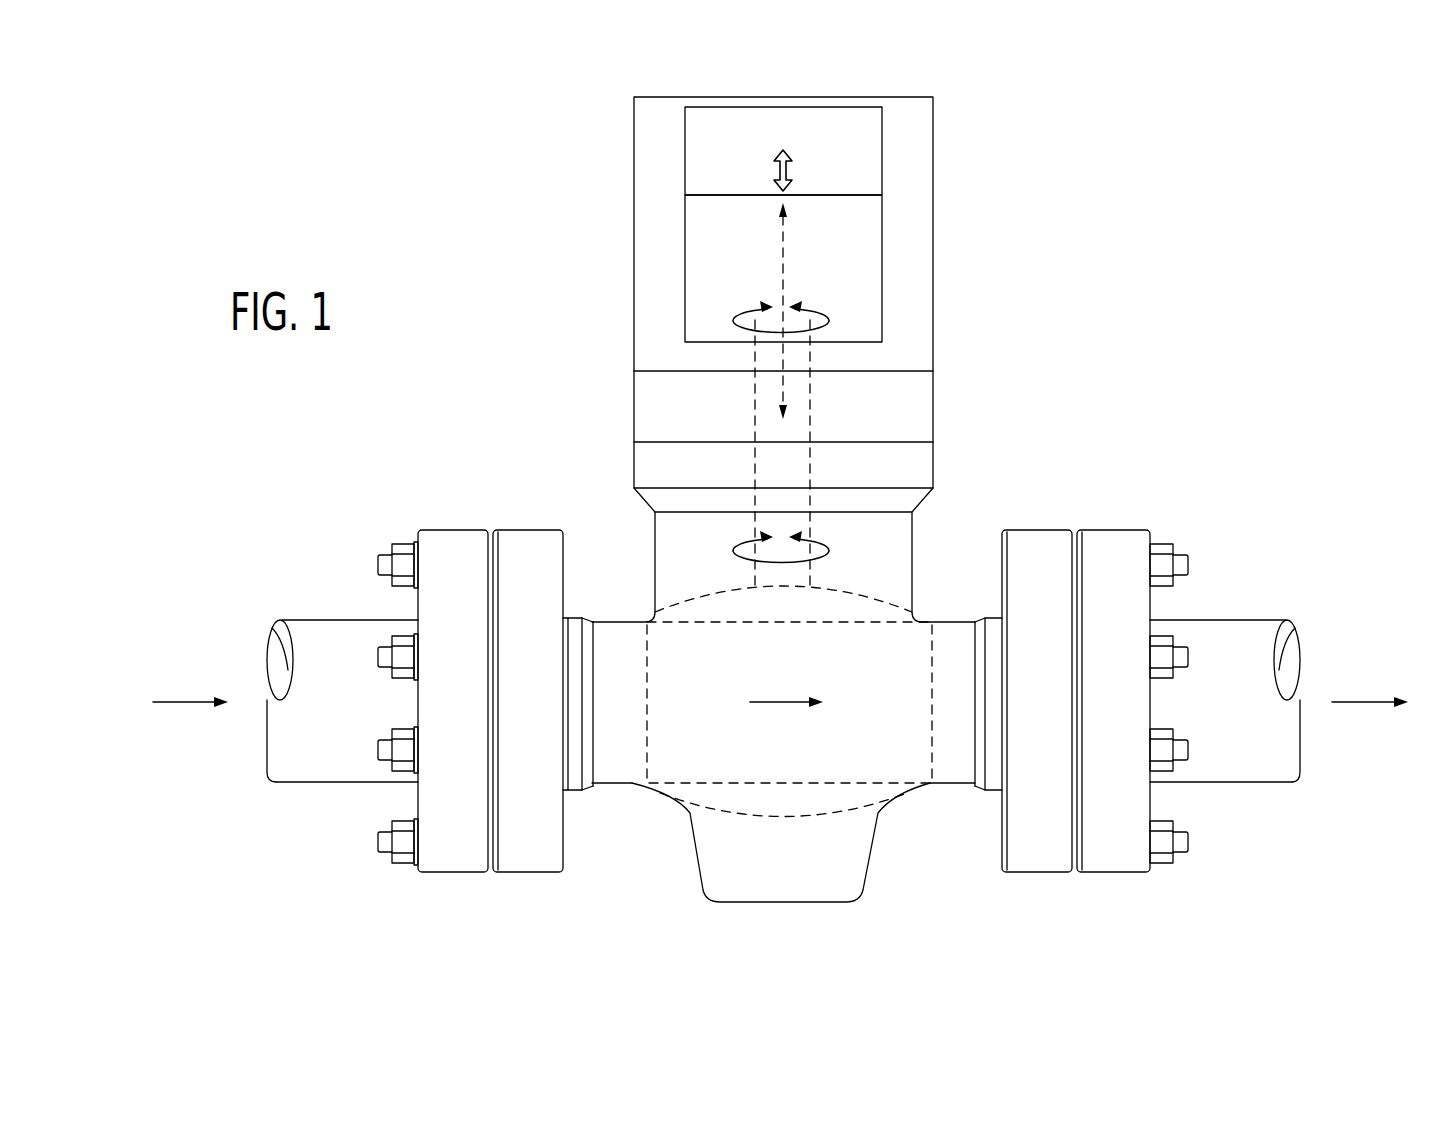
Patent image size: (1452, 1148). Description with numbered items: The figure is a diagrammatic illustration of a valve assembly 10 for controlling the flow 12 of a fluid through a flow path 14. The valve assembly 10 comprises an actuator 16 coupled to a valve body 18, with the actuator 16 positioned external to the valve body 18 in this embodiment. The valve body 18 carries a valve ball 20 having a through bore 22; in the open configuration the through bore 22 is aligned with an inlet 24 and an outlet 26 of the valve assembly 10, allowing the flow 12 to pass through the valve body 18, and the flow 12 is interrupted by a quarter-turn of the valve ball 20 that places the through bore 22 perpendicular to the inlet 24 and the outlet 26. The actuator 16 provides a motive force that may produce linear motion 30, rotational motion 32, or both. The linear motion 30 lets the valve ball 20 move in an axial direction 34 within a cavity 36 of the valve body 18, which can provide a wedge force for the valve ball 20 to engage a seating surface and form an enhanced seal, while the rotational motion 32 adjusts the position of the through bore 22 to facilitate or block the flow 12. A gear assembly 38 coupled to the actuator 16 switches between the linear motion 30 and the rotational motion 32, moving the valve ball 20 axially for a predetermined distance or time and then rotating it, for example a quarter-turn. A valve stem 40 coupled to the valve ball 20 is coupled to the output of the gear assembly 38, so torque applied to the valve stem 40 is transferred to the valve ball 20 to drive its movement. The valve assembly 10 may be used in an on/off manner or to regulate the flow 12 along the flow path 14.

The valve assembly 10 is at (1145, 308).
The flow 12 is at (185, 706).
The flow path 14 is at (273, 655).
The actuator 16 is at (882, 150).
The valve body 18 is at (935, 404).
The valve ball 20 is at (722, 812).
The through bore 22 is at (878, 740).
The inlet 24 is at (528, 530).
The outlet 26 is at (1039, 530).
The linear motion 30 is at (776, 170).
The rotational motion 32 is at (735, 318).
The axial direction 34 is at (783, 353).
The cavity 36 is at (702, 580).
The gear assembly 38 is at (882, 290).
The valve stem 40 is at (755, 422).